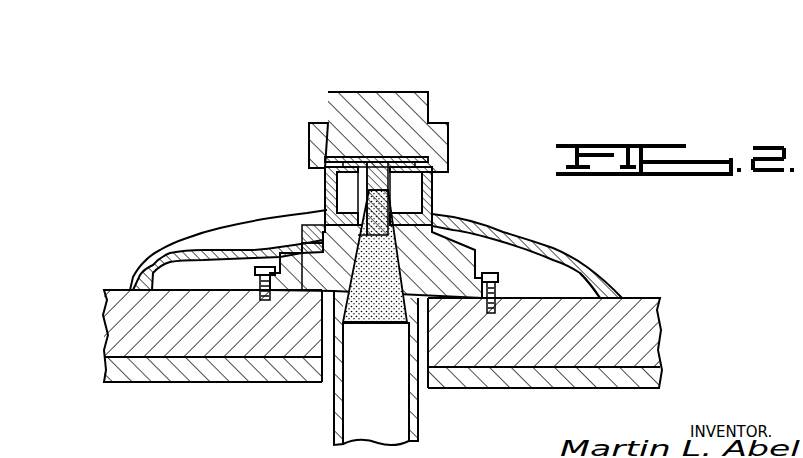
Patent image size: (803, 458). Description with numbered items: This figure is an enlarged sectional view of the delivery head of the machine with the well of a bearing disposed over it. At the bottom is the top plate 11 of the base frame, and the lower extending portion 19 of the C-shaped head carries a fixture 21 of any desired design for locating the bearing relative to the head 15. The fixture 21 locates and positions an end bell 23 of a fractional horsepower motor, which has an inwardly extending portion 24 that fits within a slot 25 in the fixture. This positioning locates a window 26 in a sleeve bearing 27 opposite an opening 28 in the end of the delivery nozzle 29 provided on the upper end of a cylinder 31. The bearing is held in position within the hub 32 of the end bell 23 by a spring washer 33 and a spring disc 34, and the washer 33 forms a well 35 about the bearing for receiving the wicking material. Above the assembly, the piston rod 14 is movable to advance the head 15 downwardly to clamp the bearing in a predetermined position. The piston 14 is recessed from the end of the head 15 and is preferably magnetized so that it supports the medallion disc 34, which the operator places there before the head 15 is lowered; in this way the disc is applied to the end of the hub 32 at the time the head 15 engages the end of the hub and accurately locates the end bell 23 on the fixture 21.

The top plate 11 is at (188, 383).
The piston rod 14 is at (377, 93).
The head 15 is at (342, 93).
The lower extending portion 19 is at (118, 318).
The fixture 21 is at (465, 228).
The end bell 23 is at (583, 256).
The inwardly extending portion 24 is at (257, 250).
The slot 25 is at (283, 292).
The window 26 is at (337, 176).
The sleeve bearing 27 is at (440, 159).
The opening 28 is at (441, 137).
The delivery nozzle 29 is at (322, 224).
The cylinder 31 is at (422, 416).
The hub 32 is at (445, 186).
The spring washer 33 is at (437, 203).
The spring disc 34 is at (388, 155).
The well 35 is at (390, 263).